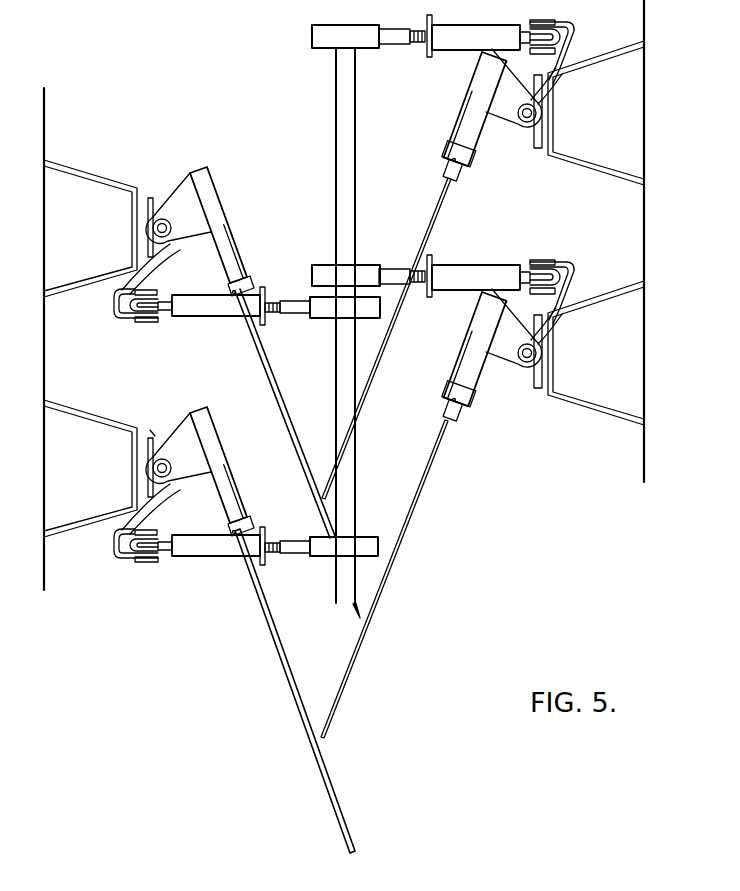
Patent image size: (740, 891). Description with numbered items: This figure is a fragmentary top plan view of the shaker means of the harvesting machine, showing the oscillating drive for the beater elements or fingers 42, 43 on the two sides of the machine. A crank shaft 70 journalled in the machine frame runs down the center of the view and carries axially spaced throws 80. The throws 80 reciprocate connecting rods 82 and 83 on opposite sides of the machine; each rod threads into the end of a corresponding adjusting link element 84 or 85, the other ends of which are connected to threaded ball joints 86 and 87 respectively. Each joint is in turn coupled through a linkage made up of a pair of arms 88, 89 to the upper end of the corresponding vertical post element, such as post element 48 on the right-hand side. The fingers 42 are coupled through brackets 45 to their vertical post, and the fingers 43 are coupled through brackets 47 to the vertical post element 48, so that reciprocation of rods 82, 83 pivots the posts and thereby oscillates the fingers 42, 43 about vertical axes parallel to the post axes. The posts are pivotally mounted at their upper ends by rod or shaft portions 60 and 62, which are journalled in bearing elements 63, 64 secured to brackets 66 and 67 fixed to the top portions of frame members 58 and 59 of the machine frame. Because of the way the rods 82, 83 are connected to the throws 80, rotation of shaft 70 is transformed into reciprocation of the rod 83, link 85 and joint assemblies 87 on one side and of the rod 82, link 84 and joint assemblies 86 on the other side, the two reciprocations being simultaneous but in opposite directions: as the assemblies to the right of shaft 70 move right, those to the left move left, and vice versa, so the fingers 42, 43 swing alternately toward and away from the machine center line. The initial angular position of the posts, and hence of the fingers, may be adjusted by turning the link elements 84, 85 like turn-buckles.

The finger 42 is at (299, 428).
The finger 43 is at (393, 335).
The bracket 45 is at (219, 189).
The bracket 47 is at (466, 91).
The vertical post element 48 is at (512, 130).
The frame member 58 is at (46, 364).
The frame member 59 is at (644, 468).
The upper rod portion 60 is at (170, 213).
The upper rod portion 62 is at (526, 128).
The bearing element 63 is at (157, 213).
The bearing element 64 is at (538, 390).
The bracket 66 is at (76, 290).
The bracket 67 is at (605, 168).
The crank shaft 70 is at (336, 118).
The throw 80 is at (327, 32).
The connecting rod 82 is at (294, 300).
The connecting rod 83 is at (392, 28).
The adjusting link element 84 is at (207, 316).
The adjusting link element 85 is at (470, 30).
The threaded ball joint 86 is at (169, 314).
The threaded ball joint 87 is at (532, 275).
The arm 88 is at (150, 265).
The arm 89 is at (112, 312).